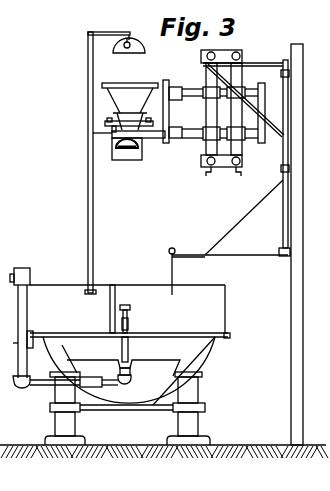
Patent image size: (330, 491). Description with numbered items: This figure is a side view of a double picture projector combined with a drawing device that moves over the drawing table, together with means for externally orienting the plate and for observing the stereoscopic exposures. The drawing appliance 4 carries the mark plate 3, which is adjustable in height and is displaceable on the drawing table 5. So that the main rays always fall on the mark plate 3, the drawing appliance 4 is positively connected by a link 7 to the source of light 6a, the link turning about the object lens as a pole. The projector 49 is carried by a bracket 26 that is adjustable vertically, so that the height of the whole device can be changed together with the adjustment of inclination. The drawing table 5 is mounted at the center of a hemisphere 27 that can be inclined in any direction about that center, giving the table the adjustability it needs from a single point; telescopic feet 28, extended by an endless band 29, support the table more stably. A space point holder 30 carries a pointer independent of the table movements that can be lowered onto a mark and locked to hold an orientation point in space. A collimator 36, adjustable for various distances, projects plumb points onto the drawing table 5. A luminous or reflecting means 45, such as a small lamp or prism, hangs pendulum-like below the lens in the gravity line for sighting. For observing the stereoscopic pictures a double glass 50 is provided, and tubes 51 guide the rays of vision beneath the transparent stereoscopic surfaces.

The mark plate 3 is at (130, 295).
The drawing appliance 4 is at (110, 309).
The drawing table 5 is at (226, 338).
The source of light 6a is at (128, 54).
The link 7 is at (87, 236).
The bracket 26 is at (246, 64).
The hemisphere 27 is at (153, 405).
The telescopic feet 28 is at (56, 425).
The endless band 29 is at (107, 410).
The space point holder 30 is at (174, 272).
The collimator 36 is at (131, 313).
The luminous or reflecting means 45 is at (127, 159).
The projector 49 is at (122, 95).
The double glass 50 is at (22, 268).
The tube 51 is at (37, 383).